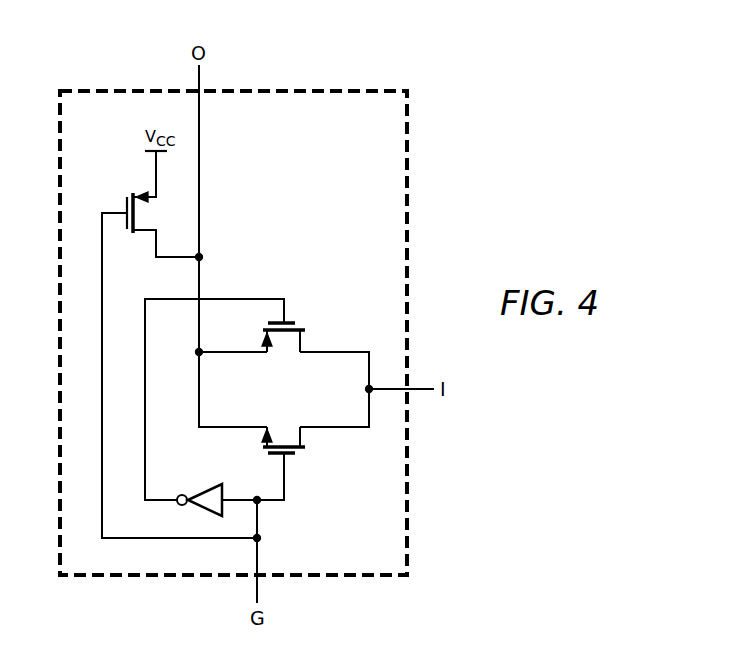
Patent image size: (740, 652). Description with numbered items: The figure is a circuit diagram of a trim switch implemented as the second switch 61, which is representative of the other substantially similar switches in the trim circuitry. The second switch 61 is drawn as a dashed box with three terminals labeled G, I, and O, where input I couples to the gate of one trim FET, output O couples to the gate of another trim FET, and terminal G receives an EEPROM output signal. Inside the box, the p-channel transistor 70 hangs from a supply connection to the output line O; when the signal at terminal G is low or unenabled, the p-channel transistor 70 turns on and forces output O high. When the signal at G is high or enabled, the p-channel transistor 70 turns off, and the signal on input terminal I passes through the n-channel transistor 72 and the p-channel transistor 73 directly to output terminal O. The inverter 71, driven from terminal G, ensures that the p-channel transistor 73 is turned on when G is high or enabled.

The second switch 61 is at (410, 168).
The p-channel transistor 70 is at (128, 206).
The inverter 71 is at (203, 488).
The n-channel transistor 72 is at (296, 457).
The p-channel transistor 73 is at (297, 323).